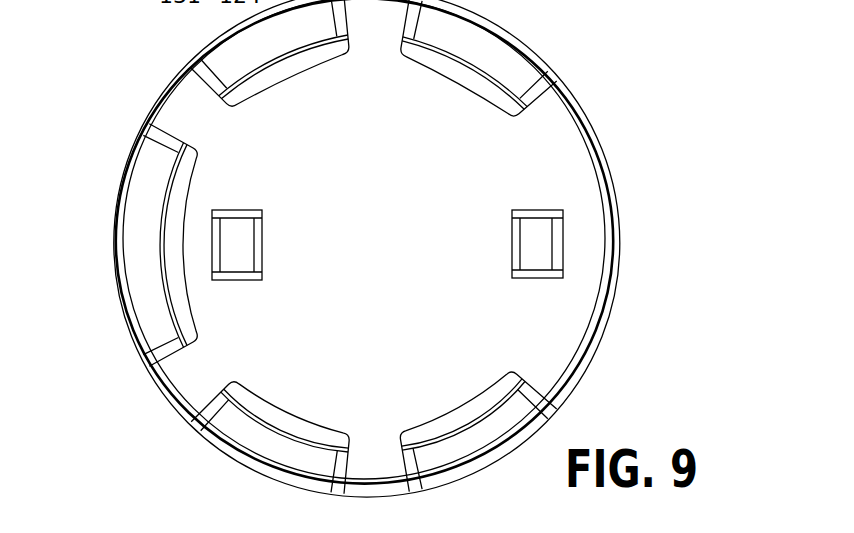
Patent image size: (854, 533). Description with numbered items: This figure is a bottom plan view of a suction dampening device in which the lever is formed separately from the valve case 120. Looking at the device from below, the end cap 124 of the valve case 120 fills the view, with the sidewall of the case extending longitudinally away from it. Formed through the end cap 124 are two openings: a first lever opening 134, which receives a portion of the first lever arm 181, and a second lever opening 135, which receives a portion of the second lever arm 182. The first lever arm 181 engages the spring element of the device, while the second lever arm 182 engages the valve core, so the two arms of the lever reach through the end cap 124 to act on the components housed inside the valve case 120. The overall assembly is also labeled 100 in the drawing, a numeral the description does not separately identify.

The connector assembly 100 is at (617, 108).
The valve case 120 is at (212, 118).
The end cap 124 is at (356, 248).
The first lever arm 181 is at (238, 247).
The second lever arm 182 is at (535, 247).
The first lever opening 134 is at (248, 280).
The second lever opening 135 is at (530, 282).